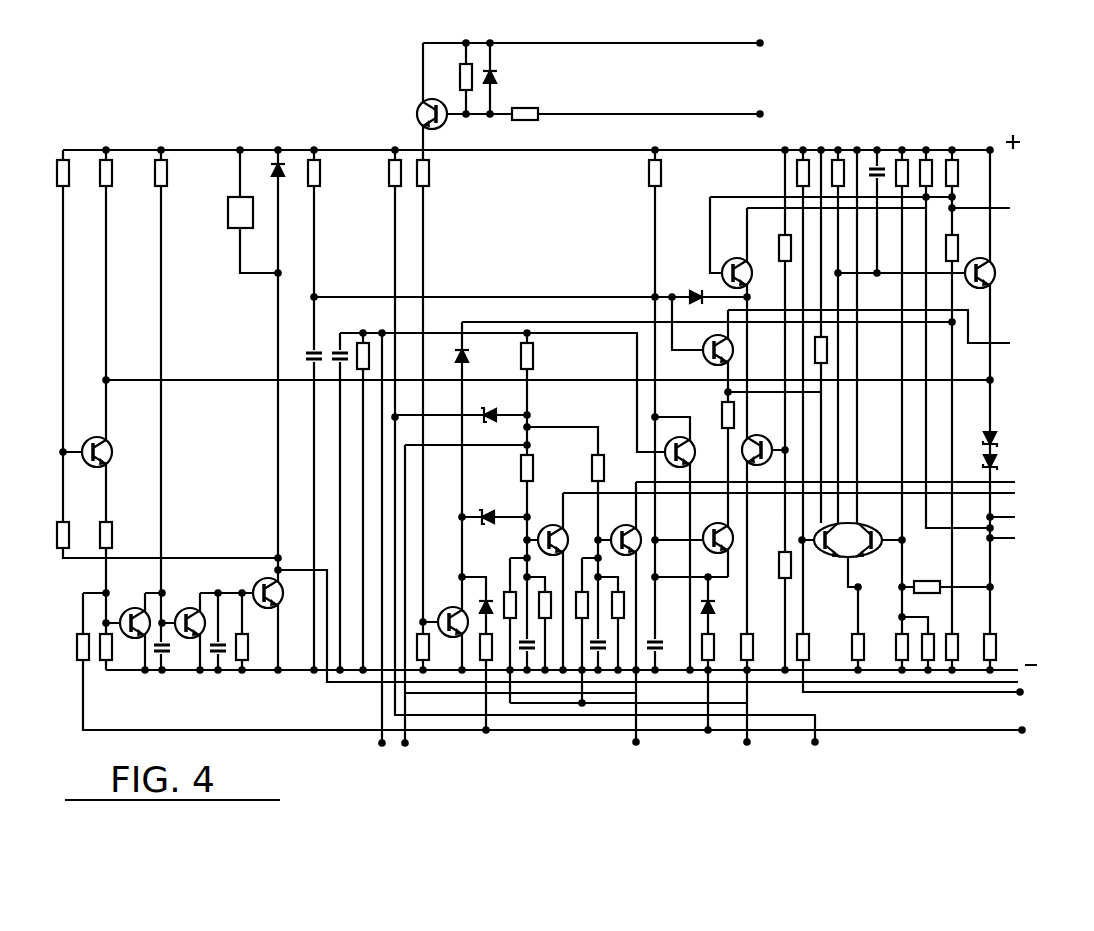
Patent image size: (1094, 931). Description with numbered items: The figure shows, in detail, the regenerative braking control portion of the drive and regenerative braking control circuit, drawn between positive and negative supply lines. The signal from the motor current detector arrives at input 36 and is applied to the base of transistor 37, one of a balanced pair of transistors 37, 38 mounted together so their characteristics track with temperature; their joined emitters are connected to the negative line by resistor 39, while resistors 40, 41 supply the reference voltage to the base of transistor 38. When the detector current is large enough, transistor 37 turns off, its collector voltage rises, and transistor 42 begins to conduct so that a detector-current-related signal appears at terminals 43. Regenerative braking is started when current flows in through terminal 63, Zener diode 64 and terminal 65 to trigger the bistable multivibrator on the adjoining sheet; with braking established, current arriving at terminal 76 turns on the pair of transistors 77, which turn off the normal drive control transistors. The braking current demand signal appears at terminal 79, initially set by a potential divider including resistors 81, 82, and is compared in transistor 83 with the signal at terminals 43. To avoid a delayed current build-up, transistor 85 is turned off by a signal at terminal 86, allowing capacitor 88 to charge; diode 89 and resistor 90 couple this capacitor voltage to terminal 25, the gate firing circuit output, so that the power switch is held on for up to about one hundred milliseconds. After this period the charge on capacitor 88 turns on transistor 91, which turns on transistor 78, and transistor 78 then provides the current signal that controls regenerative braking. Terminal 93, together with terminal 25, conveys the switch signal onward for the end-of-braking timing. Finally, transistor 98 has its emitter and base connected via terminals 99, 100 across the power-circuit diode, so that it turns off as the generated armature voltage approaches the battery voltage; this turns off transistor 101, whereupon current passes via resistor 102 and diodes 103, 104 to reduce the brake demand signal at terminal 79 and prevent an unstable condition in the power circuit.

The terminal 99 is at (760, 43).
The terminal 100 is at (760, 114).
The transistor 98 is at (417, 114).
The resistor 40 is at (900, 168).
The terminal 79 is at (952, 208).
The resistor 81 is at (958, 248).
The transistor 42 is at (992, 286).
The transistor 83 is at (739, 262).
The transistor 78 is at (722, 362).
The transistor 85 is at (693, 462).
The transistor 91 is at (736, 547).
The diode 104 is at (494, 357).
The Zener diode 64 is at (500, 415).
The pair of transistors 77 is at (613, 535).
The diode 103 is at (486, 596).
The transistor 101 is at (452, 604).
The capacitor 88 is at (680, 627).
The diode 89 is at (714, 606).
The transistor 37 is at (837, 573).
The transistor 38 is at (881, 563).
The resistor 39 is at (856, 640).
The resistor 41 is at (900, 640).
The resistor 82 is at (952, 645).
The resistor 90 is at (747, 645).
The terminals 43 is at (995, 530).
The terminal 86 is at (382, 743).
The terminal 93 is at (405, 743).
The resistor 102 is at (486, 653).
The terminal 65 is at (636, 742).
The terminal 76 is at (747, 742).
The terminal 63 is at (815, 742).
The input 36 is at (1020, 692).
The terminal 25 is at (1022, 730).